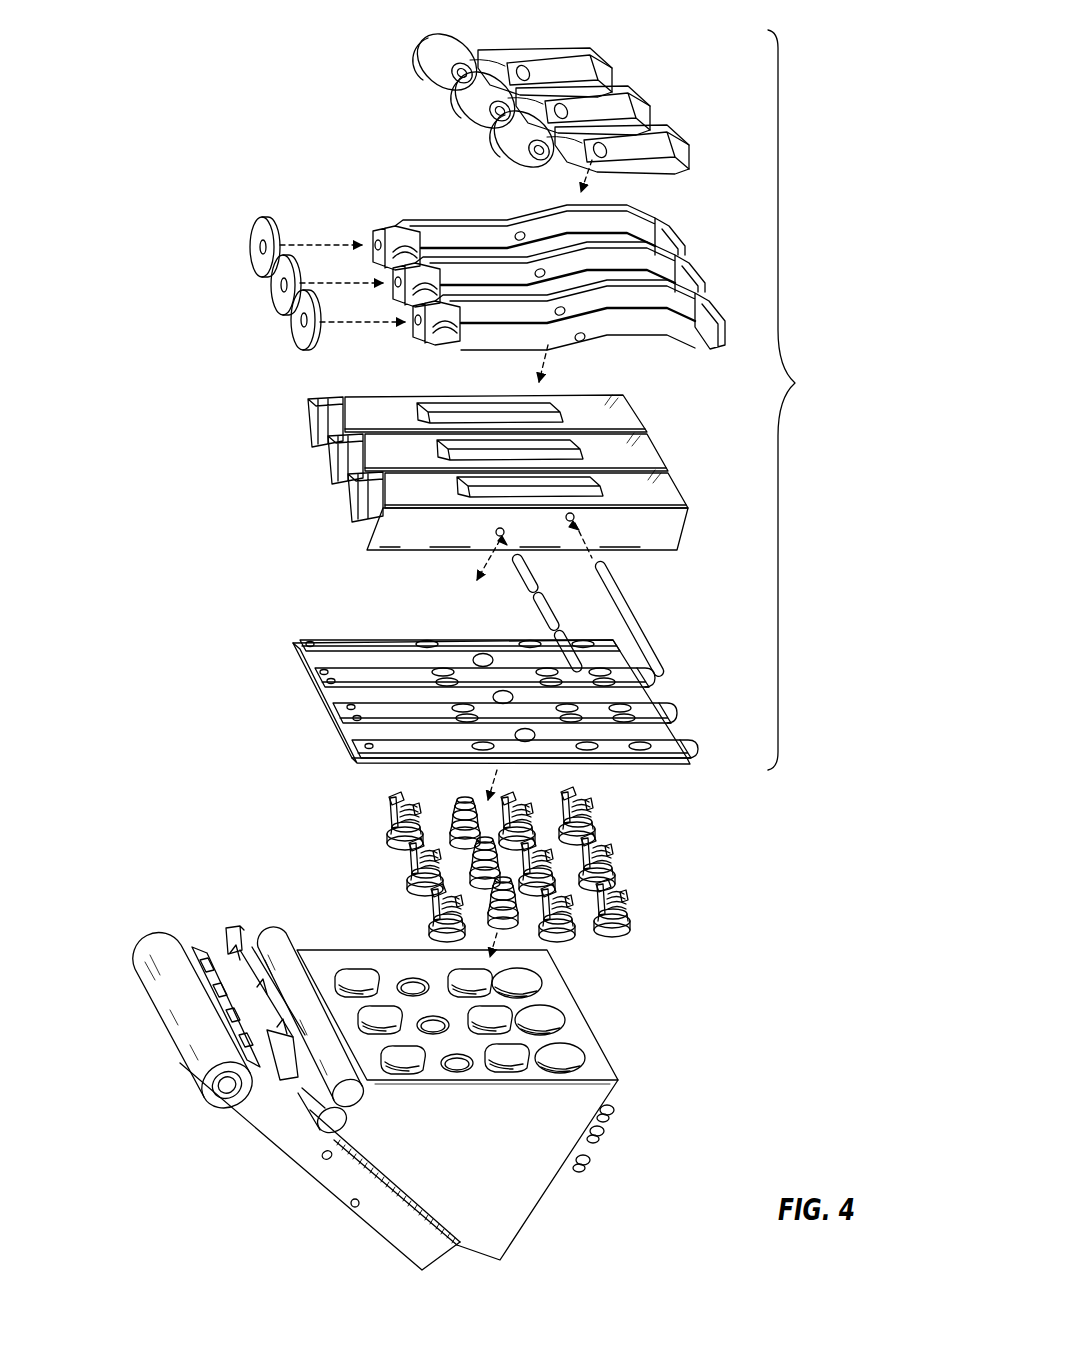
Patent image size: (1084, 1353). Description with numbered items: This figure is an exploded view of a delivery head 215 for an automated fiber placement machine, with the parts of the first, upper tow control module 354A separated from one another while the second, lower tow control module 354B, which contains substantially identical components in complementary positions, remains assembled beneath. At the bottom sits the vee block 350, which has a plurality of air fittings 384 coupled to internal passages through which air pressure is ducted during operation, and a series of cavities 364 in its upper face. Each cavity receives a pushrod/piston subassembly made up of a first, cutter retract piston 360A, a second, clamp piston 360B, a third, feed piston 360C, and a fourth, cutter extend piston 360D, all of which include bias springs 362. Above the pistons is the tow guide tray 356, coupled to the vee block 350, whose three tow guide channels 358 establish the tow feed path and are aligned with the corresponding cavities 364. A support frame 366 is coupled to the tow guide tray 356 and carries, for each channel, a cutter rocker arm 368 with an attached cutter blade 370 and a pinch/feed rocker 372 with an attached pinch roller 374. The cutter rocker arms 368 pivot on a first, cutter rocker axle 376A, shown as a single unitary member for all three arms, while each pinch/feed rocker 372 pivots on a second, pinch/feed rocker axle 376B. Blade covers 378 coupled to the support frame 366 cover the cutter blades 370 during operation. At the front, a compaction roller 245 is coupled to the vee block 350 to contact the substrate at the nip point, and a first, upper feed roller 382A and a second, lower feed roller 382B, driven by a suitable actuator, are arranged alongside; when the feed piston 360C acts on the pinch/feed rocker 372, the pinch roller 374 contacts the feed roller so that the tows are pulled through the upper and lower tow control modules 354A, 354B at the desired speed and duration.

The delivery head 215 is at (176, 403).
The upper tow control module 354A is at (816, 400).
The pinch/feed rocker 372 is at (517, 100).
The pinch roller 374 is at (420, 58).
The cutter rocker arm 368 is at (403, 226).
The cutter blade 370 is at (256, 225).
The support frame 366 is at (680, 528).
The cutter rocker axle 376A is at (632, 623).
The pinch/feed rocker axle 376B is at (558, 638).
The tow guide tray 356 is at (470, 704).
The tow guide channels 358 is at (352, 733).
The bias springs 362 is at (539, 873).
The cutter retract piston 360A is at (428, 924).
The clamp piston 360B is at (448, 794).
The feed piston 360C is at (560, 940).
The cutter extend piston 360D is at (640, 922).
The vee block 350 is at (484, 1106).
The cavities 364 is at (570, 1053).
The air fittings 384 is at (592, 1162).
The lower tow control module 354B is at (337, 1182).
The compaction roller 245 is at (173, 1022).
The blade cover 378 is at (222, 948).
The upper feed roller 382A is at (358, 1090).
The lower feed roller 382B is at (336, 1122).